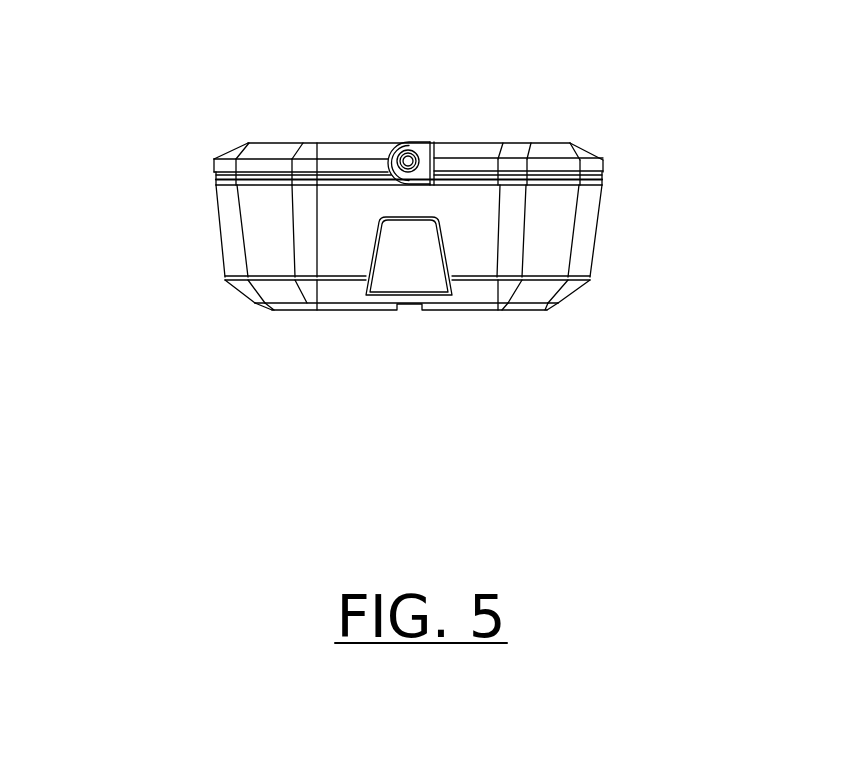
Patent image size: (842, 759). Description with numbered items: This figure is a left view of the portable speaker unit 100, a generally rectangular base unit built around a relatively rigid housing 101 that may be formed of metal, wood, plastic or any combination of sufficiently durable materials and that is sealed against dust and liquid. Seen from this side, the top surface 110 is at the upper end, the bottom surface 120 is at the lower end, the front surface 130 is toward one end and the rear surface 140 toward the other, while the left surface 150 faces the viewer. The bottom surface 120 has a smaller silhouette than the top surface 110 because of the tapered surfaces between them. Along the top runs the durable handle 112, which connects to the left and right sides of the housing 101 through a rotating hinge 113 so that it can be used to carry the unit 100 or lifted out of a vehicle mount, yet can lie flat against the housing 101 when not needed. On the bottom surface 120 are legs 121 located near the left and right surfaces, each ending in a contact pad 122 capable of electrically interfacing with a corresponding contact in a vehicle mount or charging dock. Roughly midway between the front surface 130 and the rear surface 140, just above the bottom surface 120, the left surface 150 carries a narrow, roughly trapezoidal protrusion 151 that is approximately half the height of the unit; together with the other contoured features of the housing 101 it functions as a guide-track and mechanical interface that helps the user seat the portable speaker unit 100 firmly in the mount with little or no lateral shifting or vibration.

The portable speaker unit 100 is at (387, 266).
The housing 101 is at (387, 220).
The top surface 110 is at (430, 117).
The handle 112 is at (268, 150).
The rotating hinge 113 is at (408, 142).
The bottom surface 120 is at (344, 403).
The legs 121 is at (316, 311).
The contact pad 122 is at (273, 317).
The front surface 130 is at (602, 221).
The rear surface 140 is at (215, 227).
The left surface 150 is at (416, 220).
The left protrusion 151 is at (388, 283).